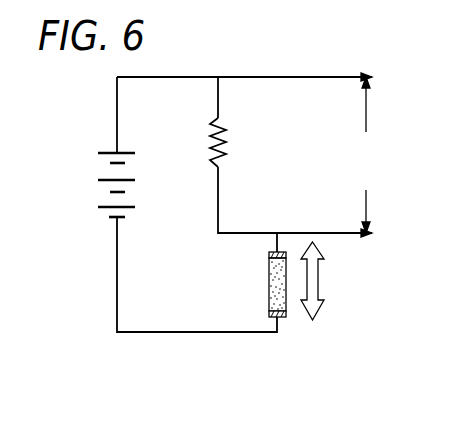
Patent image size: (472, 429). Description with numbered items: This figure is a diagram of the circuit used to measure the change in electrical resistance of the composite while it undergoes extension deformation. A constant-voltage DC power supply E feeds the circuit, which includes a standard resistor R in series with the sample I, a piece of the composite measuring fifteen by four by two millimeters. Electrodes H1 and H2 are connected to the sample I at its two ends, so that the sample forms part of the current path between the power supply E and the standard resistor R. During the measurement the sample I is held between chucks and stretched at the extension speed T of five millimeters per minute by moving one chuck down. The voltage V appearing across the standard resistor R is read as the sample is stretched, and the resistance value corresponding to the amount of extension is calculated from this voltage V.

The power supply E is at (107, 173).
The standard resistor R is at (212, 138).
The voltage V is at (367, 155).
The electrode H2 is at (268, 254).
The sample I is at (268, 283).
The electrode H1 is at (288, 317).
The extension speed T is at (326, 281).